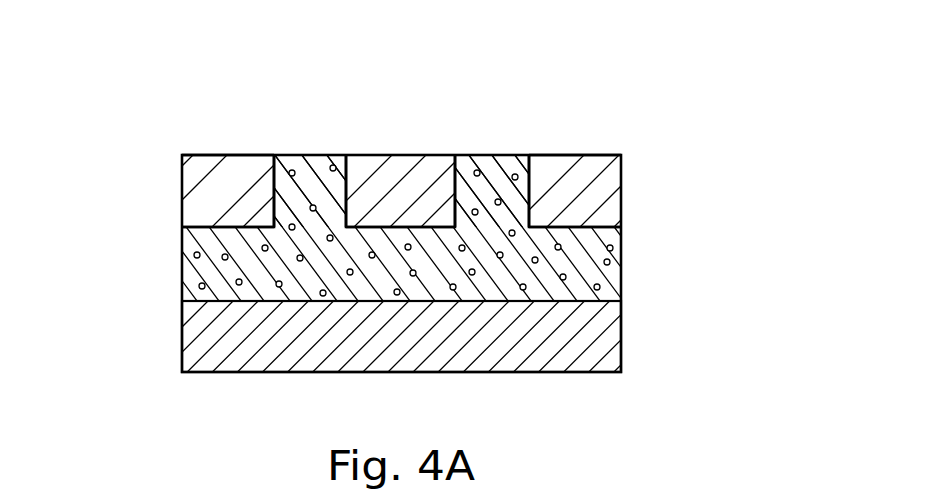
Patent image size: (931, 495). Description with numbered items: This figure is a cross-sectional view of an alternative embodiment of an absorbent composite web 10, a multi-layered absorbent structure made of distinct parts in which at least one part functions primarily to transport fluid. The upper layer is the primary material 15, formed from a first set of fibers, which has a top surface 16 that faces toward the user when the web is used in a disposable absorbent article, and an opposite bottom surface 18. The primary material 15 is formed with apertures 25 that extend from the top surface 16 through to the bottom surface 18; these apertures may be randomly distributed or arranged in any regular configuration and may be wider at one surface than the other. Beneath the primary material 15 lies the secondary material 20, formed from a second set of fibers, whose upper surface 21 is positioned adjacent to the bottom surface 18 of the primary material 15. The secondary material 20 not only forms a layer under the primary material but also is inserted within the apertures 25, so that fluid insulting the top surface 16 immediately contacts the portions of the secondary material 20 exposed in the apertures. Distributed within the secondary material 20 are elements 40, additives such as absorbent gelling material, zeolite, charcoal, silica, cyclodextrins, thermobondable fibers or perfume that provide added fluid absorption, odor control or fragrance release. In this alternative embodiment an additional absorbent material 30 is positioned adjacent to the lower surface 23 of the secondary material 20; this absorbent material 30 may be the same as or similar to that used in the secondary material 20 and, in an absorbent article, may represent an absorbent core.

The absorbent composite web 10 is at (632, 157).
The primary material 15 is at (233, 162).
The top surface 16 is at (204, 160).
The bottom surface 18 is at (200, 238).
The secondary material 20 is at (613, 262).
The upper surface 21 is at (200, 240).
The lower surface 23 is at (210, 302).
The apertures 25 is at (313, 160).
The absorbent material 30 is at (207, 362).
The elements 40 is at (203, 287).